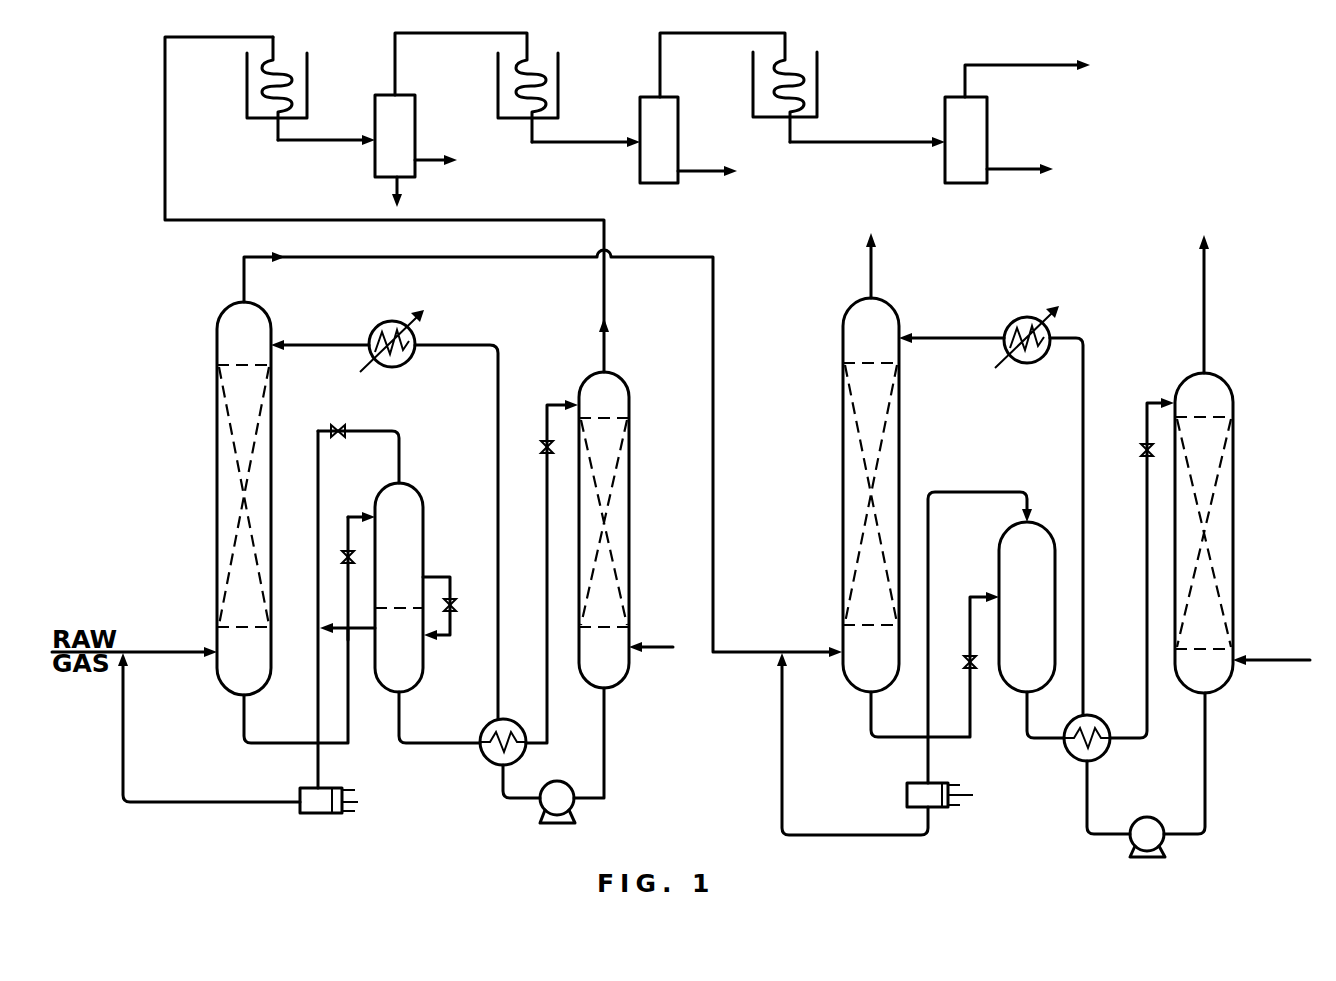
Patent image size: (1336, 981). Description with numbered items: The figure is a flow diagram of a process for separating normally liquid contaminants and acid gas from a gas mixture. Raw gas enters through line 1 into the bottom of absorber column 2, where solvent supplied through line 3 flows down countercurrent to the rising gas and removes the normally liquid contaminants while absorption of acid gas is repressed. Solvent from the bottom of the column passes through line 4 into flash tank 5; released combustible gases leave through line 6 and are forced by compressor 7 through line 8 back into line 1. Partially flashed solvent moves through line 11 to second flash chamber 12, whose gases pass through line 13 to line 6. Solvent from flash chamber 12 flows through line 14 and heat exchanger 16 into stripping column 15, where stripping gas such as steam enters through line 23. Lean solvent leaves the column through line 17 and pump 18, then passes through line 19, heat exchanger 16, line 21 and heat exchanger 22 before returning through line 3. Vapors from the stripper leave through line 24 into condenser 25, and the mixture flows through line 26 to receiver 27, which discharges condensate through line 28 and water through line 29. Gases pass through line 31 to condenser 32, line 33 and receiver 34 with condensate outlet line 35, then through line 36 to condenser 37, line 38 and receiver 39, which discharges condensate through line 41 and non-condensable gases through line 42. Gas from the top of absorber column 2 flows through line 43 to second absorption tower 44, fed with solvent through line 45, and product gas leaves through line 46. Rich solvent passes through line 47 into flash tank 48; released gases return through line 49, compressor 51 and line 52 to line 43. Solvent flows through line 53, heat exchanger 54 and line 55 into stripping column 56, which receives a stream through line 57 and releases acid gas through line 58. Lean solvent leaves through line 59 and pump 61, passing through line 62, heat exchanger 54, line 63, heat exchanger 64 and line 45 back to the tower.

The line 1 is at (157, 651).
The absorber column 2 is at (220, 447).
The line 3 is at (320, 343).
The line 4 is at (350, 727).
The flash tank 5 is at (400, 549).
The line 6 is at (319, 428).
The compressor 7 is at (307, 787).
The line 8 is at (205, 807).
The line 11 is at (460, 568).
The second flash chamber 12 is at (415, 656).
The line 13 is at (363, 624).
The line 14 is at (550, 717).
The stripping column 15 is at (623, 452).
The heat exchanger 16 is at (487, 730).
The line 17 is at (606, 776).
The pump 18 is at (557, 808).
The line 19 is at (518, 800).
The line 21 is at (496, 408).
The heat exchanger 22 is at (385, 322).
The line 23 is at (660, 648).
The line 24 is at (606, 352).
The condenser 25 is at (253, 80).
The line 26 is at (322, 142).
The receiver 27 is at (407, 120).
The line 28 is at (427, 161).
The line 29 is at (402, 185).
The line 31 is at (394, 42).
The condenser 32 is at (507, 82).
The line 33 is at (580, 145).
The receiver 34 is at (672, 142).
The line 35 is at (705, 173).
The line 36 is at (658, 42).
The condenser 37 is at (765, 108).
The line 38 is at (853, 144).
The receiver 39 is at (980, 133).
The line 41 is at (1015, 170).
The line 42 is at (1040, 62).
The line 43 is at (240, 287).
The second absorption tower 44 is at (847, 417).
The line 45 is at (948, 334).
The line 46 is at (866, 267).
The line 47 is at (872, 718).
The flash tank 48 is at (1008, 542).
The line 49 is at (977, 490).
The compressor 51 is at (913, 793).
The line 52 is at (862, 837).
The line 53 is at (1025, 712).
The heat exchanger 54 is at (1100, 750).
The line 55 is at (1150, 722).
The stripping column 56 is at (1235, 537).
The stripping gas line 57 is at (1272, 659).
The line 58 is at (1206, 337).
The line 59 is at (1208, 773).
The pump 61 is at (1157, 838).
The line 62 is at (1087, 790).
The line 63 is at (1086, 370).
The heat exchanger 64 is at (1028, 320).